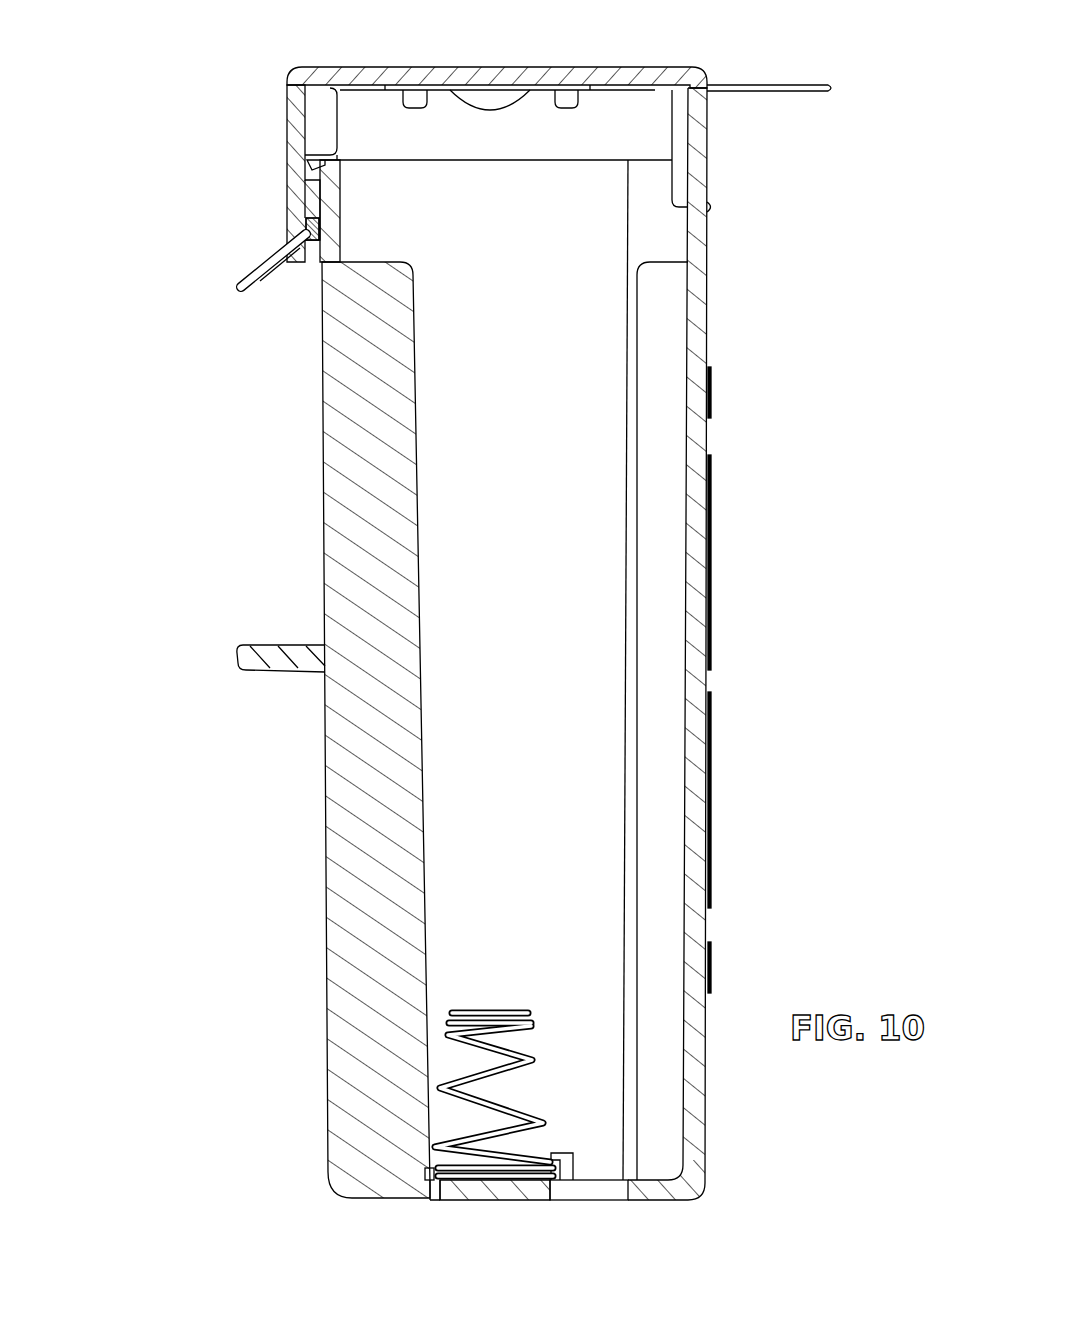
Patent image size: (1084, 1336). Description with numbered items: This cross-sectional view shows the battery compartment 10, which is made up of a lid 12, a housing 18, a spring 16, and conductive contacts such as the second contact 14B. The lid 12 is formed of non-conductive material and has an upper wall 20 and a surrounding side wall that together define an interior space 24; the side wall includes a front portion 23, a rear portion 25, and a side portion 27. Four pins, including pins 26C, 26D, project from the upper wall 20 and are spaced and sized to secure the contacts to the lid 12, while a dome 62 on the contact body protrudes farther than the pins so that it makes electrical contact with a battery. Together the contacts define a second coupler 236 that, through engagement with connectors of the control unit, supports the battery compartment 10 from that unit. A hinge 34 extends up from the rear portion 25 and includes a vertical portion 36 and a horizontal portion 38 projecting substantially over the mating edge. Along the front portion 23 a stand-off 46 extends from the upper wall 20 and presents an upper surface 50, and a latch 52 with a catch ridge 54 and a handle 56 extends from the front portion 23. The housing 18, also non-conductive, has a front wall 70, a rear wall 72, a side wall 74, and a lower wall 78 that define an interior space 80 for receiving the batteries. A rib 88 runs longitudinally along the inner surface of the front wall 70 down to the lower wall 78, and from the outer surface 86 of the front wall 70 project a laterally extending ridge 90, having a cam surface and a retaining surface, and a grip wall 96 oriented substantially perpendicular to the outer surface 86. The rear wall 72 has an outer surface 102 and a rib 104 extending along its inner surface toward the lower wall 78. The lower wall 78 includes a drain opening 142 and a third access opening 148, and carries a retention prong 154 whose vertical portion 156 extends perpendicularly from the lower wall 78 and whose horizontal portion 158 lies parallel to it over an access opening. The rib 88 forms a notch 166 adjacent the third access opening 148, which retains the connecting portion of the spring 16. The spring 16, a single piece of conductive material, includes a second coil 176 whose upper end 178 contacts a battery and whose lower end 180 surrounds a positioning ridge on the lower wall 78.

The battery compartment 10 is at (516, 657).
The lid 12 is at (524, 187).
The second contact 14B is at (850, 96).
The spring 16 is at (425, 1047).
The housing 18 is at (593, 701).
The upper wall 20 is at (540, 75).
The front portion 23 is at (297, 128).
The interior space 24 is at (375, 128).
The rear portion 25 is at (710, 125).
The pin 26C is at (415, 108).
The pin 26D is at (565, 108).
The side portion 27 is at (597, 115).
The hinge 34 is at (658, 188).
The vertical portion 36 is at (678, 120).
The horizontal portion 38 is at (712, 208).
The stand-off 46 is at (320, 100).
The upper surface 50 is at (325, 178).
The latch 52 is at (240, 302).
The catch ridge 54 is at (305, 262).
The handle 56 is at (250, 268).
The dome 62 is at (490, 112).
The front wall 70 is at (324, 730).
The rear wall 72 is at (715, 726).
The side wall 74 is at (535, 480).
The lower wall 78 is at (476, 1212).
The interior space 80 is at (448, 443).
The outer surface 86 is at (325, 812).
The rib 88 is at (345, 567).
The ridge 90 is at (306, 224).
The grip member or wall 96 is at (240, 662).
The outer surface 102 is at (712, 800).
The rib 104 is at (665, 312).
The drain opening 142 is at (605, 1195).
The third access opening 148 is at (430, 1205).
The retention prong 154 is at (578, 1148).
The vertical portion 156 is at (555, 1170).
The horizontal portion 158 is at (575, 1152).
The notch 166 is at (425, 1184).
The second coil 176 is at (450, 1050).
The upper end 178 is at (482, 1015).
The lower end 180 is at (500, 1182).
The second coupler 236 is at (778, 66).